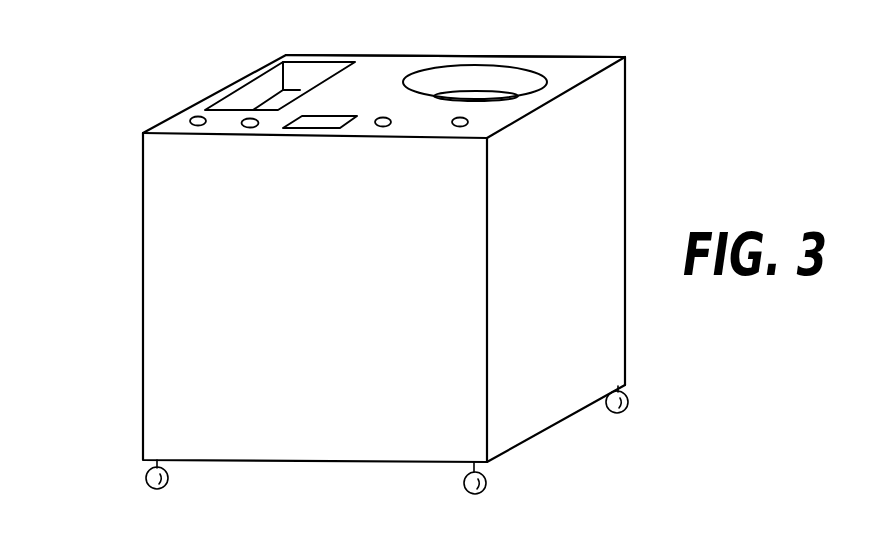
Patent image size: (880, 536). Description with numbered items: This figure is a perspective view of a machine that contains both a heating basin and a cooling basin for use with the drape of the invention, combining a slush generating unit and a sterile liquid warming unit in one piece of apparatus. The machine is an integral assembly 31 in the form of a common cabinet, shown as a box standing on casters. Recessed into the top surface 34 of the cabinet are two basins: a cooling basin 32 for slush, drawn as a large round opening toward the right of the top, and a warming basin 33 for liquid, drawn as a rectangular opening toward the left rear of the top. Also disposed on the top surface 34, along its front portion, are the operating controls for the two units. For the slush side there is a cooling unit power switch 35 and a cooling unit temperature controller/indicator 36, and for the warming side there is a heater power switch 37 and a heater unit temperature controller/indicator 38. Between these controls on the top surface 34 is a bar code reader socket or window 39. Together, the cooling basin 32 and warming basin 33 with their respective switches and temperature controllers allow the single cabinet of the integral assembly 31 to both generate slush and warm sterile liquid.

The integral assembly 31 is at (138, 300).
The cooling basin 32 is at (487, 93).
The warming basin 33 is at (290, 90).
The top surface 34 is at (390, 63).
The cooling unit power switch 35 is at (381, 128).
The cooling unit temperature controller/indicator 36 is at (469, 122).
The heater power switch 37 is at (190, 121).
The heater unit temperature controller/indicator 38 is at (247, 128).
The bar code reader socket or window 39 is at (288, 120).